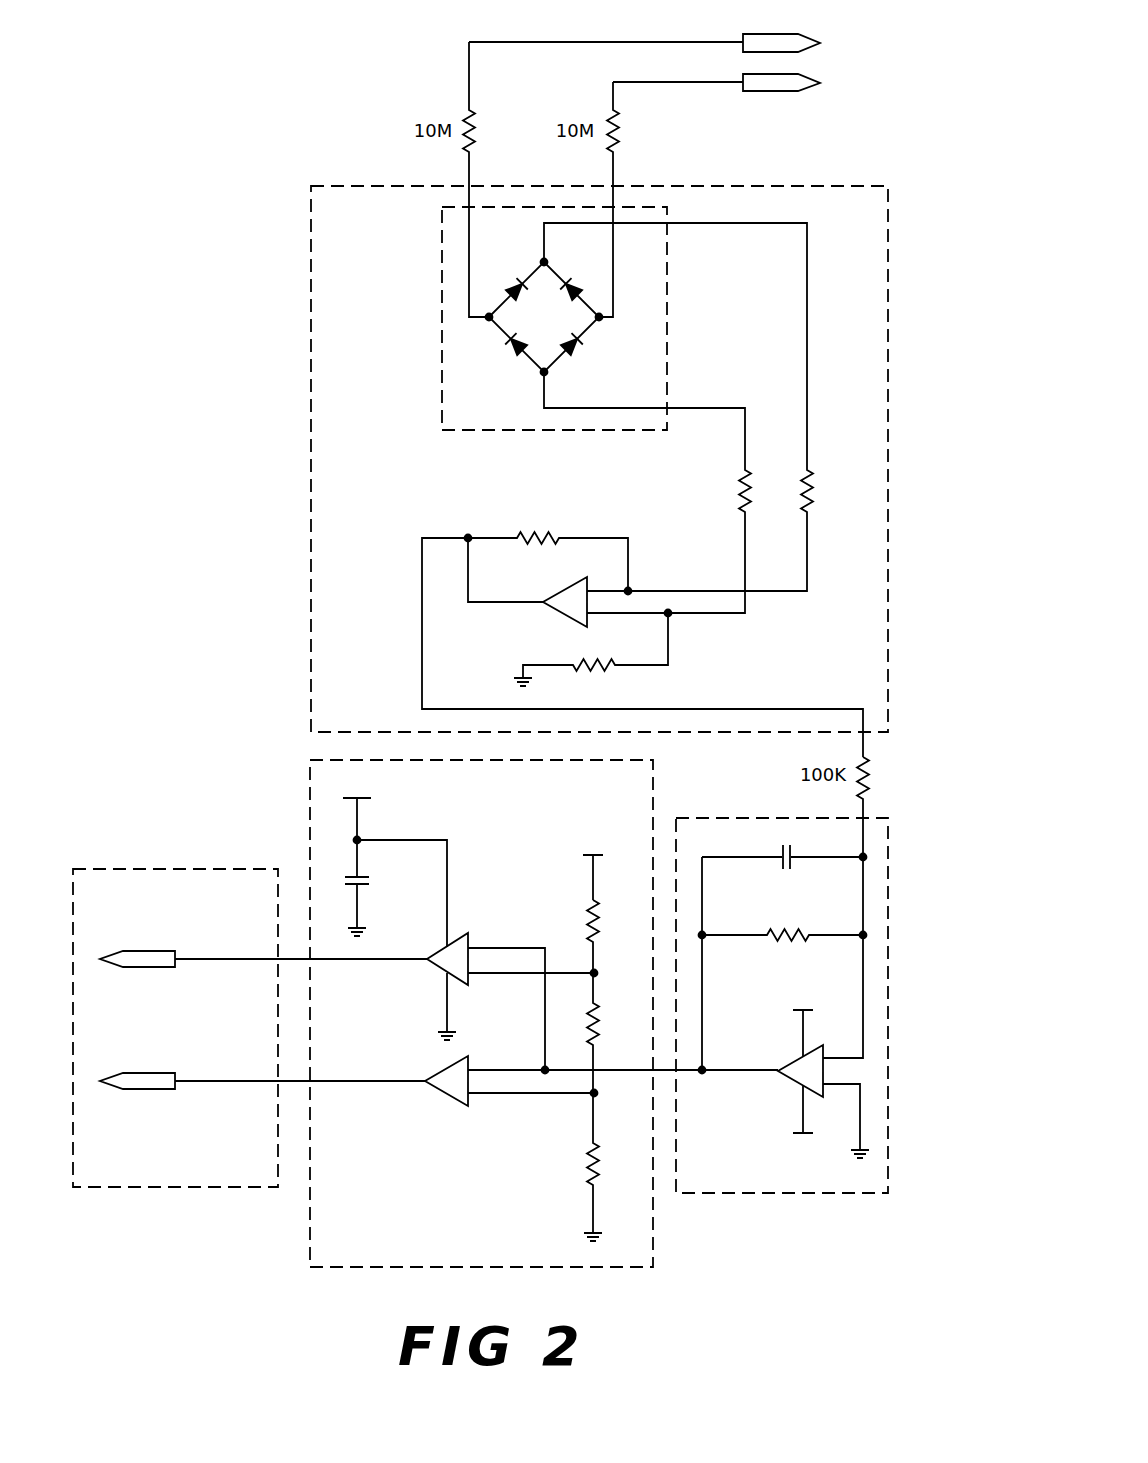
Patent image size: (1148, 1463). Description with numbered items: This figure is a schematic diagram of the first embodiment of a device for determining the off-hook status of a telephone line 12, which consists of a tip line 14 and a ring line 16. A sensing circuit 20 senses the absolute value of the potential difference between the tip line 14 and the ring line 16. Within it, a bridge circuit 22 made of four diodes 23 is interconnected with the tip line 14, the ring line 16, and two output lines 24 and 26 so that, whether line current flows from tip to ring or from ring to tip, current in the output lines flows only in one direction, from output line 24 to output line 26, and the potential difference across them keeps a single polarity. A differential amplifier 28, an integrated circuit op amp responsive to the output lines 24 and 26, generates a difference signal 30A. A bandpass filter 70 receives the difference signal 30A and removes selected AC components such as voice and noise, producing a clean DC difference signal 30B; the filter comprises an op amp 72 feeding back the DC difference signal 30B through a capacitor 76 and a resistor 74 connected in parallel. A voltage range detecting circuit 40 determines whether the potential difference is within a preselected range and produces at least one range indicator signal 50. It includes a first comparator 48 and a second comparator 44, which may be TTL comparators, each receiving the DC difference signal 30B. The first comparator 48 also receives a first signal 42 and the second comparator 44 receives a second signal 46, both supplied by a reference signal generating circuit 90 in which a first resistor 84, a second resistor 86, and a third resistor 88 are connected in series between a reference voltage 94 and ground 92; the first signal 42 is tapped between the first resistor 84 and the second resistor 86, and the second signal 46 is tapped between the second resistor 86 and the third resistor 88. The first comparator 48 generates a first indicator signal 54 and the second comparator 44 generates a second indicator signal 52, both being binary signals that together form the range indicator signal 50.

The telephone line 12 is at (675, 68).
The tip line 14 is at (726, 41).
The ring line 16 is at (727, 87).
The sensing circuit 20 is at (309, 228).
The bridge circuit 22 is at (440, 290).
The diodes 23 is at (503, 290).
The output line 24 is at (808, 406).
The output line 26 is at (706, 407).
The differential amplifier 28 is at (560, 618).
The difference signal 30A is at (806, 708).
The DC difference signal 30B is at (577, 1075).
The voltage range detecting circuit 40 is at (308, 797).
The first signal 42 is at (591, 969).
The second comparator 44 is at (437, 1074).
The second signal 46 is at (592, 1099).
The first comparator 48 is at (446, 947).
The range indicator signal 50 is at (194, 867).
The second indicator signal 52 is at (135, 1090).
The first indicator signal 54 is at (133, 969).
The bandpass filter 70 is at (734, 816).
The op amp 72 is at (797, 1083).
The resistor 74 is at (780, 932).
The capacitor 76 is at (781, 853).
The first resistor 84 is at (590, 916).
The second resistor 86 is at (590, 1014).
The third resistor 88 is at (590, 1172).
The reference signal generating circuit 90 is at (583, 1018).
The ground 92 is at (599, 1238).
The reference voltage 94 is at (598, 823).